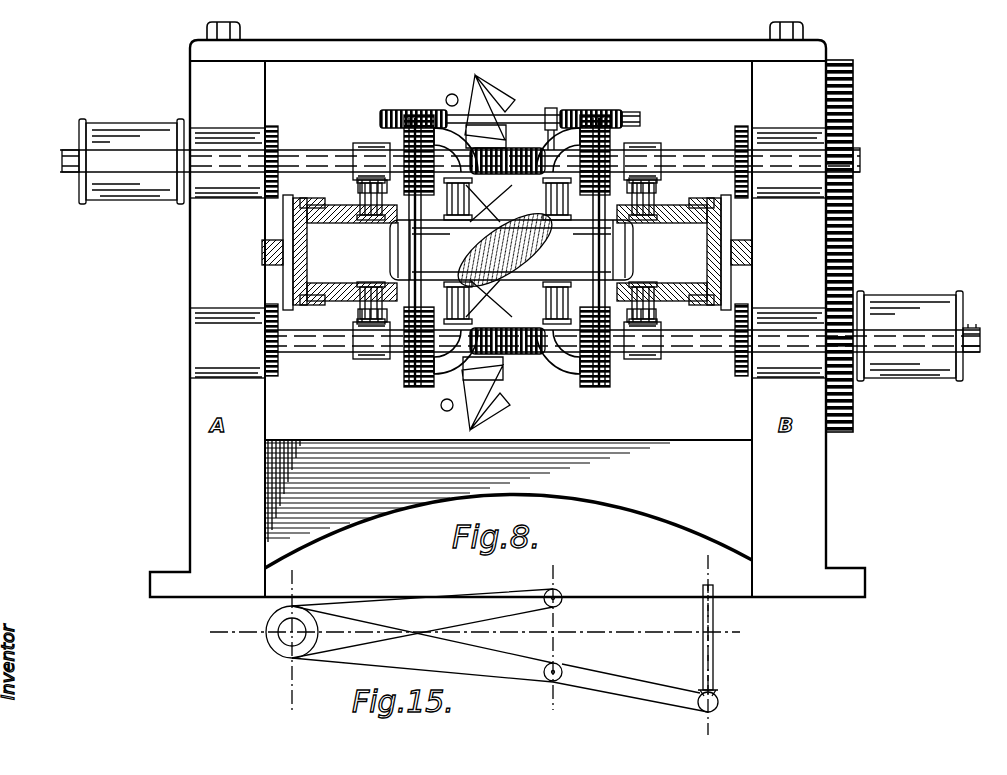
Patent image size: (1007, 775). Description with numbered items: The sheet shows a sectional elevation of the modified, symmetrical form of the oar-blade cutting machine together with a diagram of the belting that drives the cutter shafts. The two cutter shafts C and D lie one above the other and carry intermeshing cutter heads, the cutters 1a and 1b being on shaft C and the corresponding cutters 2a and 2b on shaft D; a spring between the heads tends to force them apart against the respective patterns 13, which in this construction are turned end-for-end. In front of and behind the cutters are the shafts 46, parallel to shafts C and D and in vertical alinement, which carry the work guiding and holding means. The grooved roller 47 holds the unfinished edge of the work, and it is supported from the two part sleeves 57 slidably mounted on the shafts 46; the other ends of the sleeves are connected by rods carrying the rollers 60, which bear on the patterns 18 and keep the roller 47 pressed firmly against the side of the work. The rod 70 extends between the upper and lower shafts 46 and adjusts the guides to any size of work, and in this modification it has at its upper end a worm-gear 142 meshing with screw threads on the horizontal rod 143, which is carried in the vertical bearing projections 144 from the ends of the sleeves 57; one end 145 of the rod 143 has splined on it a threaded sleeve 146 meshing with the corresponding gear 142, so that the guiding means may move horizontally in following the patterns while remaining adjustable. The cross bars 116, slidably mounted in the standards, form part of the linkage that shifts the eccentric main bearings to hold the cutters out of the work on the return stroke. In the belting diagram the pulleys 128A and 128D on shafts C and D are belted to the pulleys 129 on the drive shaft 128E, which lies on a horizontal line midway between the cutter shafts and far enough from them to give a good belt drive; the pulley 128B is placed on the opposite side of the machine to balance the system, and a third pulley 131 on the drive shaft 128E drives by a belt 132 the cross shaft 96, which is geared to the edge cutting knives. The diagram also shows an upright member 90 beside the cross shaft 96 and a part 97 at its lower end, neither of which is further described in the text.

In FIG. 8, the shaft 46 is at (300, 150).
In FIG. 8, the two part sleeve 57 is at (353, 150).
In FIG. 8, the rod 70 is at (404, 136).
In FIG. 8, the pattern 13 is at (290, 310).
In FIG. 8, the pattern 18 is at (318, 305).
In FIG. 8, the roller 60 is at (350, 223).
In FIG. 8, the cross bar 116 is at (262, 253).
In FIG. 8, the roller 47 is at (508, 218).
In FIG. 8, the cutter 1a is at (480, 147).
In FIG. 8, the cutter 1b is at (504, 174).
In FIG. 8, the cutter 2a is at (494, 410).
In FIG. 8, the cutter 2b is at (540, 370).
In FIG. 8, the worm-gear 142 is at (406, 110).
In FIG. 8, the horizontal rod 143 is at (536, 115).
In FIG. 8, the vertical bearing projection 144 is at (570, 108).
In FIG. 8, the end of rod 145 is at (628, 112).
In FIG. 8, the threaded sleeve 146 is at (624, 124).
In FIG. 8, the pulley 128A is at (131, 153).
In FIG. 15, the pulley 128A is at (565, 600).
In FIG. 8, the pulley 128B is at (910, 328).
In FIG. 15, the pulley 128D is at (594, 672).
In FIG. 15, the drive shaft 128E is at (284, 657).
In FIG. 15, the pulley 129 is at (297, 612).
In FIG. 15, the third pulley 131 is at (266, 636).
In FIG. 15, the belt 132 is at (500, 659).
In FIG. 15, the rod 90 is at (714, 612).
In FIG. 15, the cross shaft 96 is at (719, 702).
In FIG. 15, the pivot pin 97 is at (714, 690).
In FIG. 8, the shaft C is at (62, 160).
In FIG. 15, the shaft C is at (563, 592).
In FIG. 8, the shaft D is at (972, 354).
In FIG. 15, the shaft D is at (563, 672).